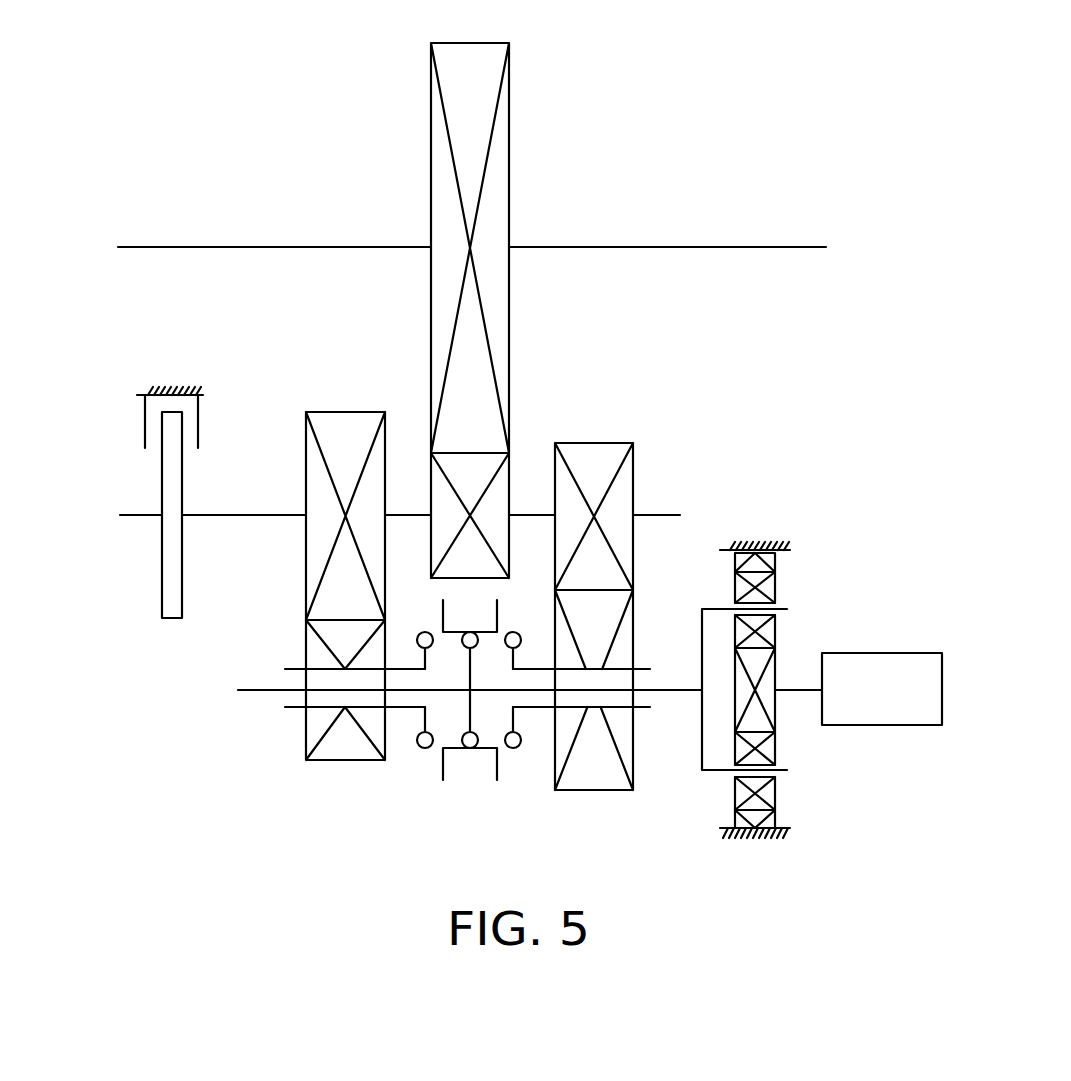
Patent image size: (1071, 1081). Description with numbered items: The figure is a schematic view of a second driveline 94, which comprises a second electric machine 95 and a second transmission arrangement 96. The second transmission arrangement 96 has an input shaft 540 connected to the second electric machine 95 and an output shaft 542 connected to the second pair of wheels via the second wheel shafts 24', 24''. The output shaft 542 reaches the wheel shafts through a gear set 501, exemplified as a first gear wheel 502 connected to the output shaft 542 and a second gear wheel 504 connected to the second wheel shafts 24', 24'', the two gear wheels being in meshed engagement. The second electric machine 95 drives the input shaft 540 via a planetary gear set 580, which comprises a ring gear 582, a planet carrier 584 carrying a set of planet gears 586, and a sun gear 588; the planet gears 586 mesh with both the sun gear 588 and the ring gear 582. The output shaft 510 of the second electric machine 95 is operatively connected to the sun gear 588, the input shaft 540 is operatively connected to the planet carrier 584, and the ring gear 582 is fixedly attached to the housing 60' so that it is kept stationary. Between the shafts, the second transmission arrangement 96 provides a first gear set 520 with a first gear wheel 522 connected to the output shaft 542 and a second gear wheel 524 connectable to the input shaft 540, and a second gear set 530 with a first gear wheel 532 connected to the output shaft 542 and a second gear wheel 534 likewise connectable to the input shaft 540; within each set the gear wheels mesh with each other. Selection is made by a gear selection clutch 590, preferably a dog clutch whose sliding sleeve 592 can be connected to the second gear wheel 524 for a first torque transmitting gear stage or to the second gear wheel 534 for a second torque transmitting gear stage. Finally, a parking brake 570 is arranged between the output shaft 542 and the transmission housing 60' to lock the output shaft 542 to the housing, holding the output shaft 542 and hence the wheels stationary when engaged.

The second driveline 94 is at (640, 95).
The gear set 501 is at (386, 208).
The second gear wheel 504 is at (431, 96).
The first gear wheel 502 is at (431, 486).
The second wheel shaft 24' is at (274, 206).
The second wheel shaft 24'' is at (667, 206).
The second transmission arrangement 96 is at (338, 350).
The transmission housing 60' is at (443, 426).
The first gear wheel 522 is at (306, 442).
The second gear wheel 524 is at (306, 734).
The first gear set 520 is at (268, 597).
The parking brake 570 is at (126, 416).
The output shaft 542 is at (534, 515).
The first gear wheel 532 is at (633, 470).
The second gear wheel 534 is at (598, 790).
The second gear set 530 is at (665, 568).
The input shaft 540 is at (682, 690).
The gear selection clutch 590 is at (425, 726).
The sliding sleeve 592 is at (442, 758).
The planetary gear set 580 is at (785, 528).
The sun gear 588 is at (777, 665).
The output shaft of the second electric machine 510 is at (798, 690).
The second electric machine 95 is at (903, 653).
The planet carrier 584 is at (783, 764).
The planet gears 586 is at (781, 790).
The ring gear 582 is at (781, 818).